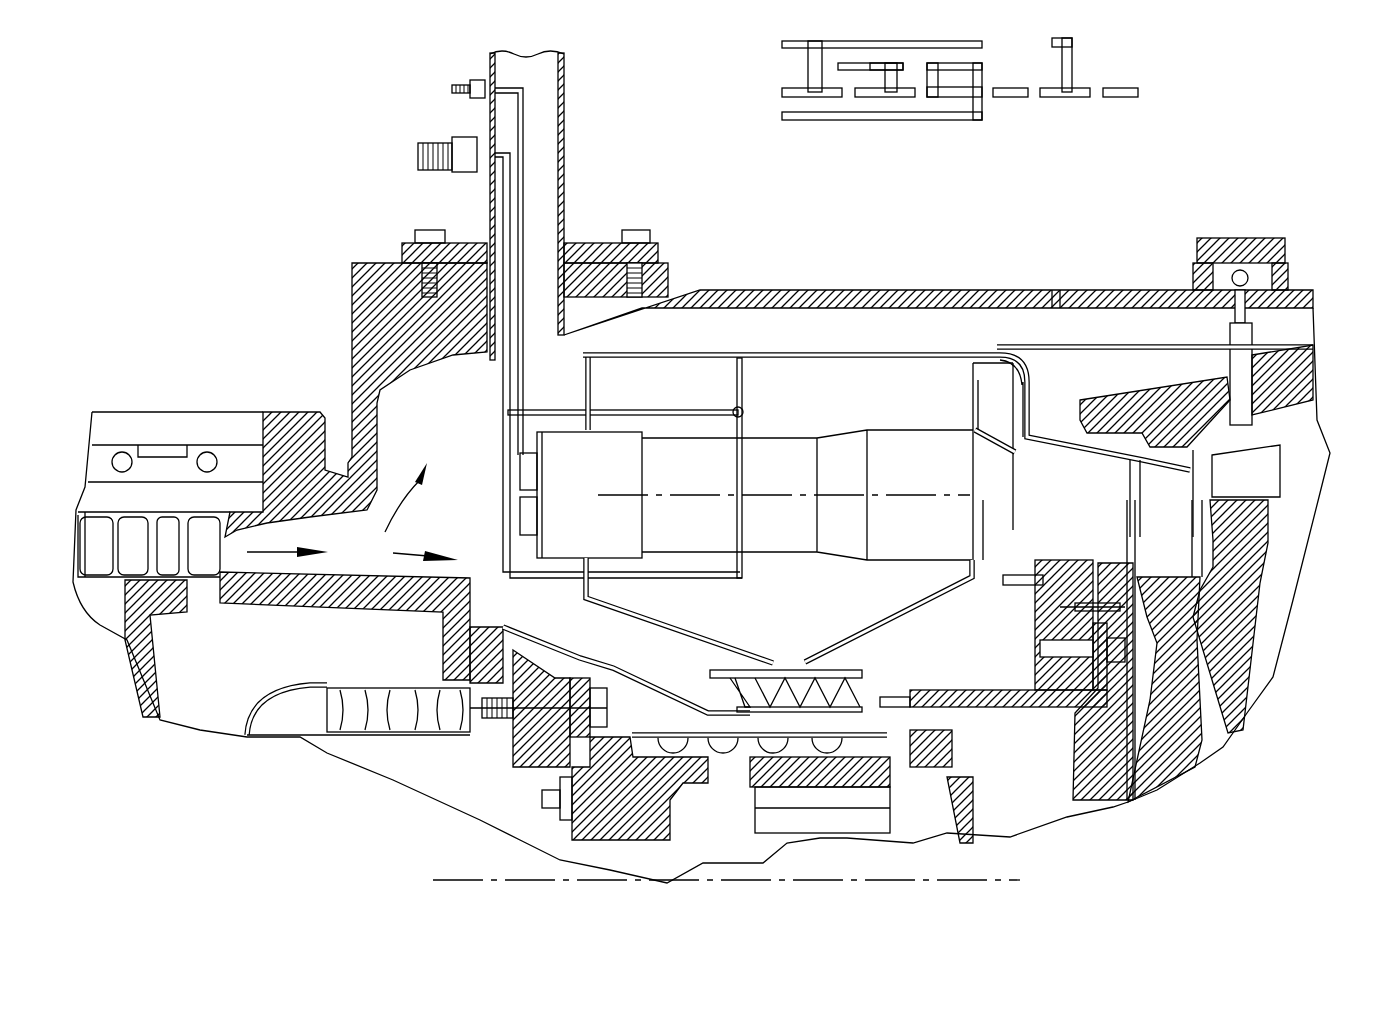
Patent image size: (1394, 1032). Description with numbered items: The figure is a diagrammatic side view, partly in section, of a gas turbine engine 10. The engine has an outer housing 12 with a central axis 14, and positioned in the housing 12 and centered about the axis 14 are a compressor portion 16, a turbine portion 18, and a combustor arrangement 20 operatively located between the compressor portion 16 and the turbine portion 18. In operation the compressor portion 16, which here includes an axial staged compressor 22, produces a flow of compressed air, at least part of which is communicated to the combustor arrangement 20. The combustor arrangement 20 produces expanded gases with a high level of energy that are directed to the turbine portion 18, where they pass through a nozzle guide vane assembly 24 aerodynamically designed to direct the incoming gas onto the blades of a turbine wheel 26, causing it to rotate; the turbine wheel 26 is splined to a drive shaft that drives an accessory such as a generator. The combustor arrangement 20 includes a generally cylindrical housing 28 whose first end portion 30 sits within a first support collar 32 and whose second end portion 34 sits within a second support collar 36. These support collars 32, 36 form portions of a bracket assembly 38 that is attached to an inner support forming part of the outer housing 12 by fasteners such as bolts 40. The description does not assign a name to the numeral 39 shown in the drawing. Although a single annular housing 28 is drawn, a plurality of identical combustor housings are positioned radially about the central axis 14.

The gas turbine engine 10 is at (990, 205).
The outer housing 12 is at (1068, 292).
The central axis 14 is at (490, 880).
The compressor portion 16 is at (270, 345).
The turbine portion 18 is at (1350, 403).
The combustor arrangement 20 is at (783, 320).
The axial staged compressor 22 is at (143, 647).
The nozzle guide vane assembly 24 is at (1050, 410).
The turbine wheel 26 is at (1183, 760).
The cylindrical housing 28 is at (768, 438).
The first end portion 30 is at (602, 541).
The first support collar 32 is at (582, 428).
The second end portion 34 is at (933, 541).
The second support collar 36 is at (975, 460).
The bracket assembly 38 is at (1012, 315).
The retaining bolt 39 is at (1033, 630).
The bolts 40 is at (1000, 630).